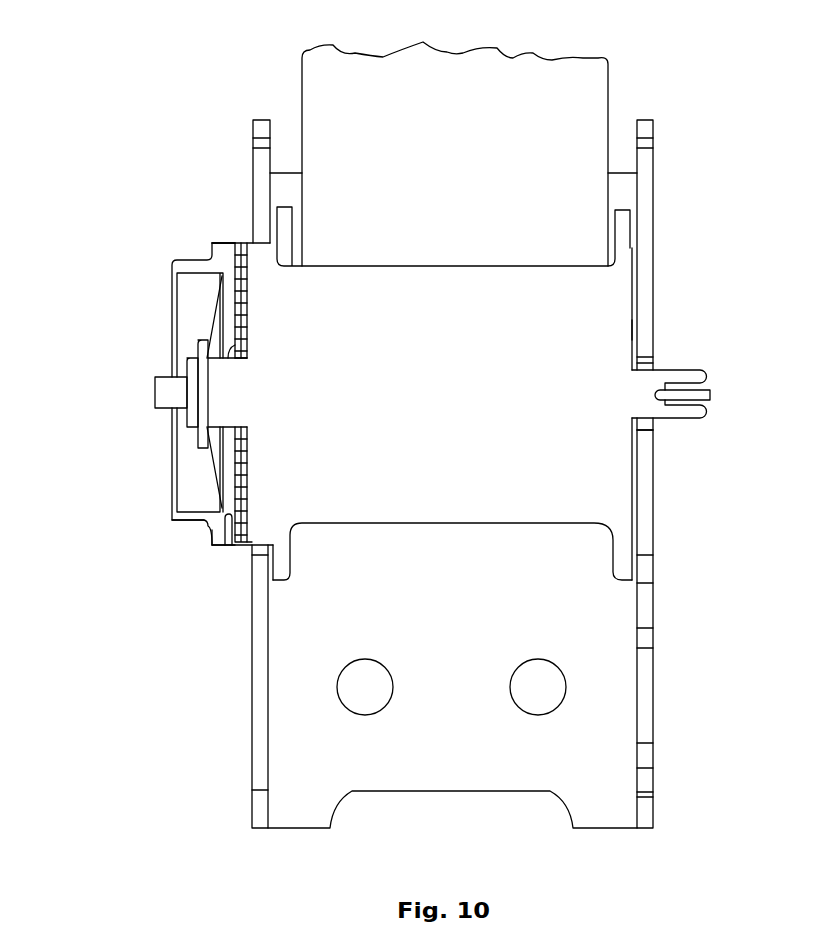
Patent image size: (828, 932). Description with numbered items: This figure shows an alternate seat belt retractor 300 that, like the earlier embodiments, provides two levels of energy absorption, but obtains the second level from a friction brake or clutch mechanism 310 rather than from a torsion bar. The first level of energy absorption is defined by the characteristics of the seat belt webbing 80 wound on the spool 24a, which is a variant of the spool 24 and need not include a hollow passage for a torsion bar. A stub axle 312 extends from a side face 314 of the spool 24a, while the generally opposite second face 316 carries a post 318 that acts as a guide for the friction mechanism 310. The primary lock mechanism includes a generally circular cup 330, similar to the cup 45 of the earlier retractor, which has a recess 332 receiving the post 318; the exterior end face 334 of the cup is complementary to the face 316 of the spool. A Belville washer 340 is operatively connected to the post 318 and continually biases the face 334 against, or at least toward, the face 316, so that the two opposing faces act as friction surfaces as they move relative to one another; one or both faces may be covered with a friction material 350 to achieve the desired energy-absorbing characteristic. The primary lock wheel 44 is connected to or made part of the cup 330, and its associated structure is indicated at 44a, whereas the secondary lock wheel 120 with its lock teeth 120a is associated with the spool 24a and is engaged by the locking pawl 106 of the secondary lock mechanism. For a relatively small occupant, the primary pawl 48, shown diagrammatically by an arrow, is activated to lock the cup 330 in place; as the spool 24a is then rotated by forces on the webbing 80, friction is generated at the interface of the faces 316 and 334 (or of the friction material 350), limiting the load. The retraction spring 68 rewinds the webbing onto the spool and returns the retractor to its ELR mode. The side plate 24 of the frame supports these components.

The seat belt webbing 80 is at (478, 82).
The spool 24a is at (397, 312).
The locking pawl 106 is at (250, 234).
The spool 24 is at (665, 205).
The seat belt retractor 300 is at (665, 298).
The side face 314 is at (630, 318).
The retraction spring 68 is at (713, 395).
The stub axle 312 is at (667, 421).
The primary pawl 48 is at (214, 229).
The cup 45 is at (227, 253).
The friction brake or clutch mechanism 310 is at (210, 283).
The second face 316 is at (246, 309).
The recess 332 is at (246, 341).
The post 318 is at (213, 405).
The friction material 350 is at (247, 438).
The Belville washer 340 is at (217, 473).
The cup 330 is at (192, 535).
The primary lock wheel 44 is at (207, 550).
The end face of the cup 334 is at (227, 518).
The bracket corner 44a is at (235, 547).
The lock wheel 120 is at (262, 530).
The lock teeth 120a is at (262, 553).